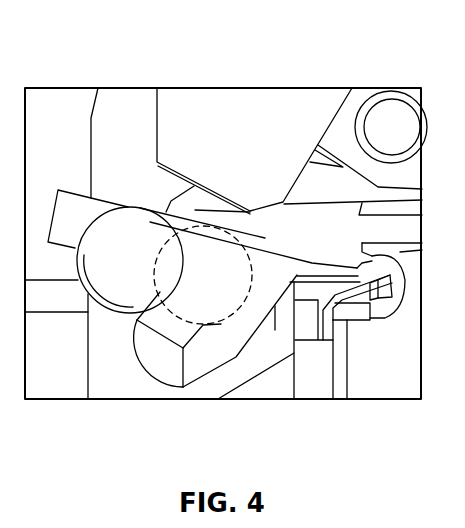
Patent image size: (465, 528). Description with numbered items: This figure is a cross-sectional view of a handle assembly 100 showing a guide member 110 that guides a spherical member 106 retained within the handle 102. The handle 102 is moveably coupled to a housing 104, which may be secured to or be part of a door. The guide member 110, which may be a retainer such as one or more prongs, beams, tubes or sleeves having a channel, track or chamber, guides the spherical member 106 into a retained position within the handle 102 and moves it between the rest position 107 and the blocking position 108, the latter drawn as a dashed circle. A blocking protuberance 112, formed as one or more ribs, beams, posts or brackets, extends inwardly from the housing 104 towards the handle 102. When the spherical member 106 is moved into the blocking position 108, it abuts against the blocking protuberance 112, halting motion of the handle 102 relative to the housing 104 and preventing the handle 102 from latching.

The handle assembly 100 is at (98, 52).
The handle 102 is at (337, 247).
The housing 104 is at (395, 110).
The spherical member 106 is at (122, 277).
The rest position 107 is at (83, 288).
The blocking position 108 is at (221, 325).
The guide member 110 is at (60, 190).
The blocking protuberance 112 is at (245, 122).